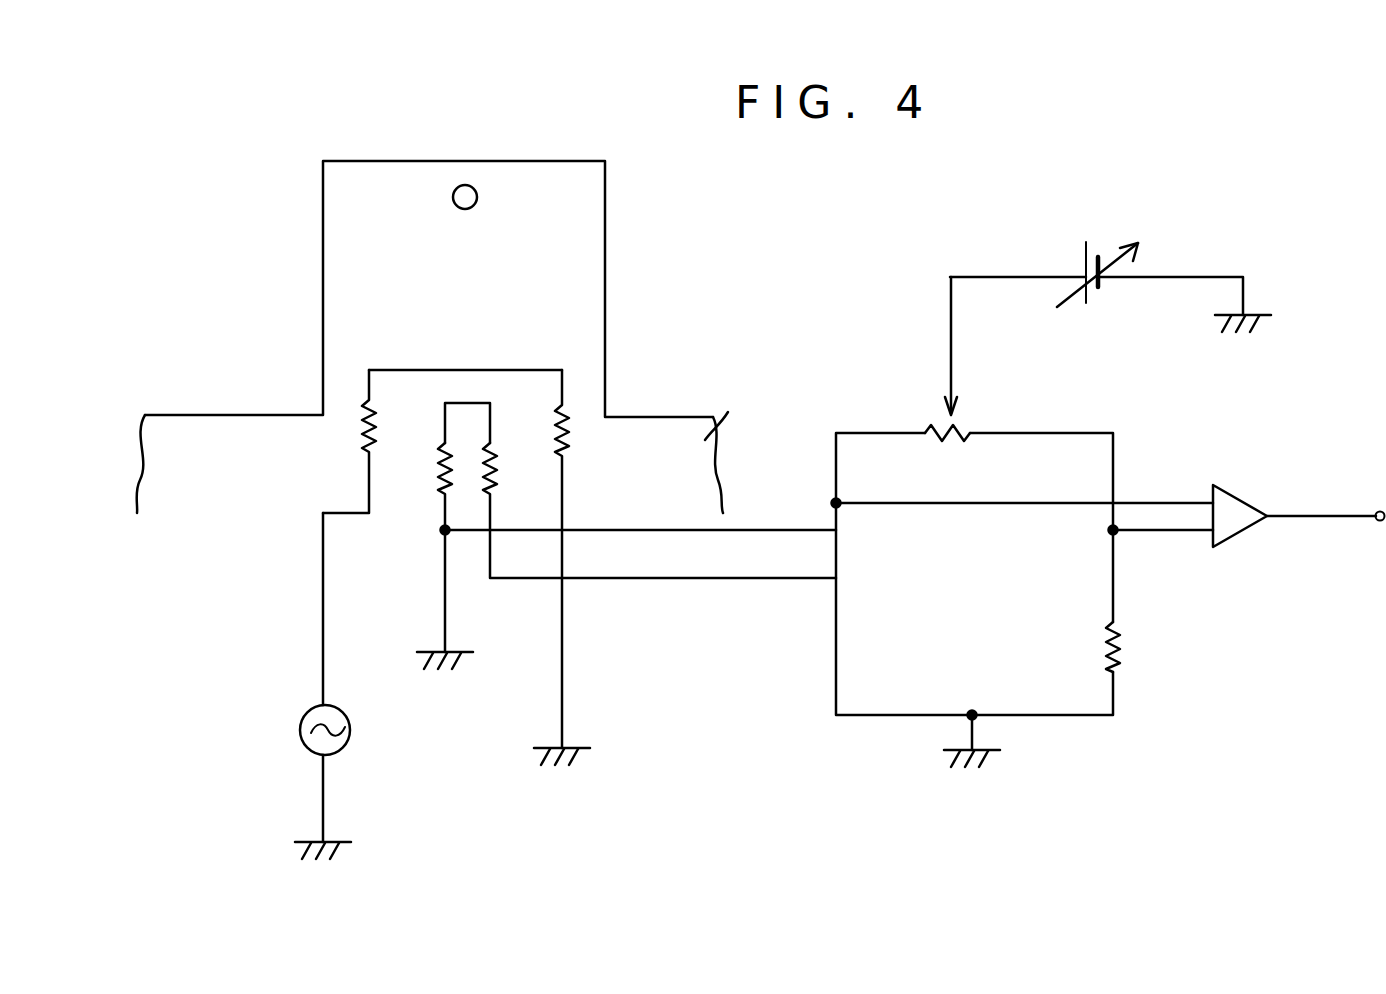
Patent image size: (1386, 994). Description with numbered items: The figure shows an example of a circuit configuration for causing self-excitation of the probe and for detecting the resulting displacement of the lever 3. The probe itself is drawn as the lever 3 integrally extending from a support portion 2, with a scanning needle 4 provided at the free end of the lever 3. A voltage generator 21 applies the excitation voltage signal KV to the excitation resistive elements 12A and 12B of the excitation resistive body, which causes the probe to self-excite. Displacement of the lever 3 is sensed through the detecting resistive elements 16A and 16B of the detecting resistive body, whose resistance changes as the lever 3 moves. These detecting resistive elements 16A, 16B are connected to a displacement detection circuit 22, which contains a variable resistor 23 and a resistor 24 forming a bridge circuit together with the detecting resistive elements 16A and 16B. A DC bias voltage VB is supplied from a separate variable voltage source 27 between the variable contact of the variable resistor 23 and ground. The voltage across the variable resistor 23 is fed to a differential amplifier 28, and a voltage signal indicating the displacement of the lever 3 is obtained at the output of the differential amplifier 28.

The support portion 2 is at (722, 420).
The lever 3 is at (588, 258).
The scanning needle 4 is at (468, 186).
The excitation resistive element 12A is at (357, 423).
The excitation resistive element 12B is at (573, 440).
The detecting resistive element 16A is at (432, 465).
The detecting resistive element 16B is at (505, 455).
The voltage generator 21 is at (300, 722).
The displacement detection circuit 22 is at (838, 330).
The variable resistor 23 is at (968, 420).
The resistor 24 is at (1124, 648).
The variable voltage source 27 is at (1083, 267).
The differential amplifier 28 is at (1238, 493).